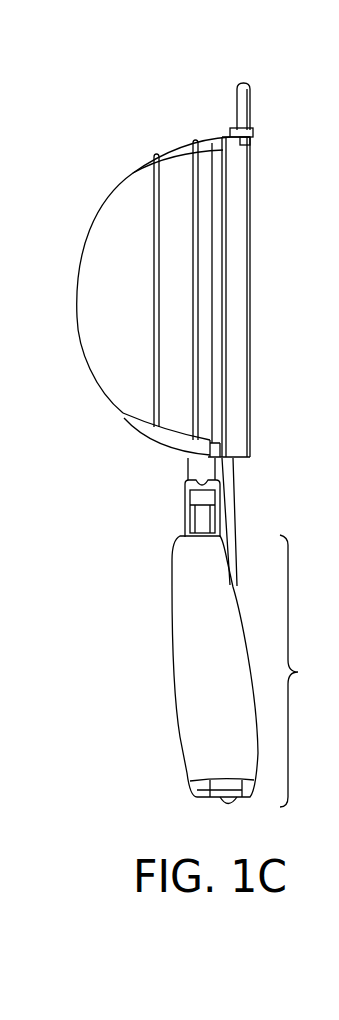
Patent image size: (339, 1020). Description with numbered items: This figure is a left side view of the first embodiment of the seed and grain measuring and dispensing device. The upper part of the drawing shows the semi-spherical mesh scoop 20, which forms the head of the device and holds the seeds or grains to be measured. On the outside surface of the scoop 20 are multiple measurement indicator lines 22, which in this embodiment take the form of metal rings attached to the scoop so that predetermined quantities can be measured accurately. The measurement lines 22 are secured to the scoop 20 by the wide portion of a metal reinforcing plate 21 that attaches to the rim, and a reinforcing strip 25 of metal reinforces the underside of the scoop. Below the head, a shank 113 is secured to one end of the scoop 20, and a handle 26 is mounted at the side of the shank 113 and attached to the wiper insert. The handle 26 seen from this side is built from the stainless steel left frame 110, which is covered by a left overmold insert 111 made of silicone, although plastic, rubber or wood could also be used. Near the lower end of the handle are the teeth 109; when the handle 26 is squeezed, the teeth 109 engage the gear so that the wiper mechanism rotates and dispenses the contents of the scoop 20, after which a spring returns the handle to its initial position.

The scoop 20 is at (90, 377).
The reinforcing plate 21 is at (218, 143).
The measurement indicator lines 22 is at (158, 155).
The reinforcing strip 25 is at (77, 298).
The handle 26 is at (263, 632).
The teeth 109 is at (197, 789).
The left frame 110 is at (203, 610).
The left overmold insert 111 is at (203, 663).
The shank 113 is at (202, 518).